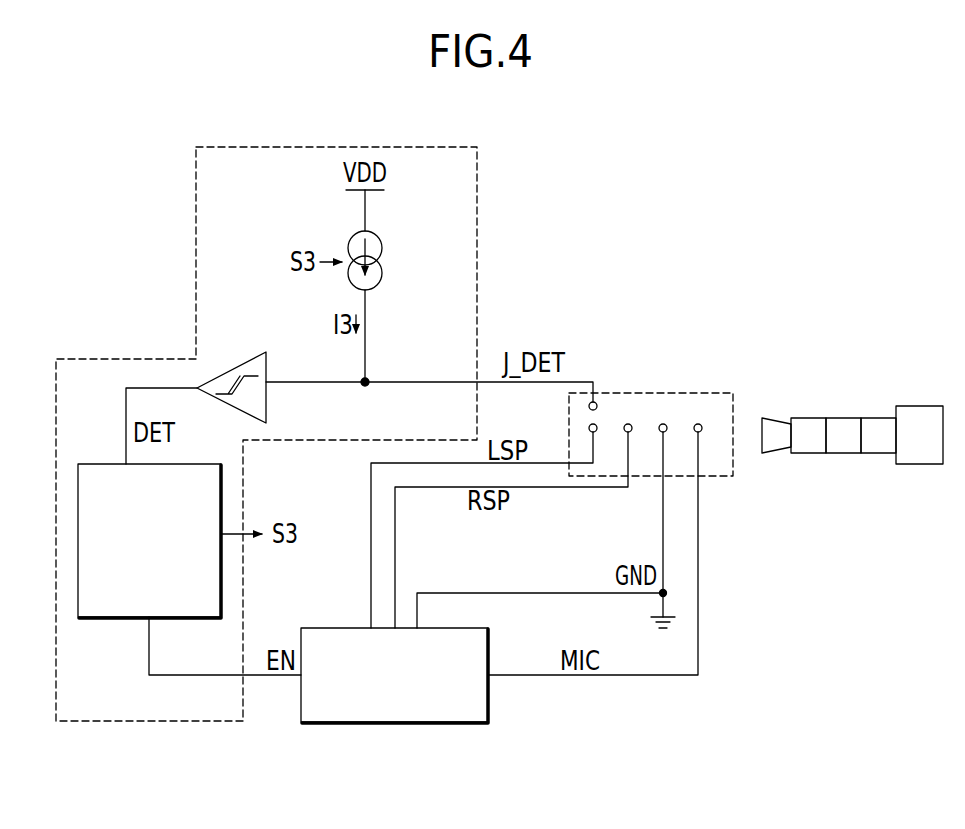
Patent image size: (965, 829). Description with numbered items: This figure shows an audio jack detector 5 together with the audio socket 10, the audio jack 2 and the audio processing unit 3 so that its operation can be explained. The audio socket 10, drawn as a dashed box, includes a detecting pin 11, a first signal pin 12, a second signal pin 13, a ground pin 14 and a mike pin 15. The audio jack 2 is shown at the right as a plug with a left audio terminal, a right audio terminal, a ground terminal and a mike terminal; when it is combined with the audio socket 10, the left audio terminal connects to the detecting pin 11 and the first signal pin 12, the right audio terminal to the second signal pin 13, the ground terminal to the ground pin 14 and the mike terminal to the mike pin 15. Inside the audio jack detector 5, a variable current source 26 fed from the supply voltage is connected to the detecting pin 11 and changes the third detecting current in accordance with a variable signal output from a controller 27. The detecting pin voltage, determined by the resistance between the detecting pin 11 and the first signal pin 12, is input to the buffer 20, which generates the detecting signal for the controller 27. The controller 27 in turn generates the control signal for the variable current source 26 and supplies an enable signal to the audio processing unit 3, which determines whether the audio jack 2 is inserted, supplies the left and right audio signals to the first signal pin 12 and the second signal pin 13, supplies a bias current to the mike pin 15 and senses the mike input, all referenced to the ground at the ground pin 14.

The audio jack 2 is at (917, 404).
The audio processing unit 3 is at (490, 700).
The audio jack detector 5 is at (477, 227).
The audio socket 10 is at (667, 393).
The detecting pin 11 is at (598, 402).
The first signal pin 12 is at (597, 430).
The second signal pin 13 is at (632, 430).
The ground pin 14 is at (667, 430).
The mike pin 15 is at (702, 430).
The buffer 20 is at (267, 405).
The variable current source 26 is at (349, 238).
The controller 27 is at (122, 619).